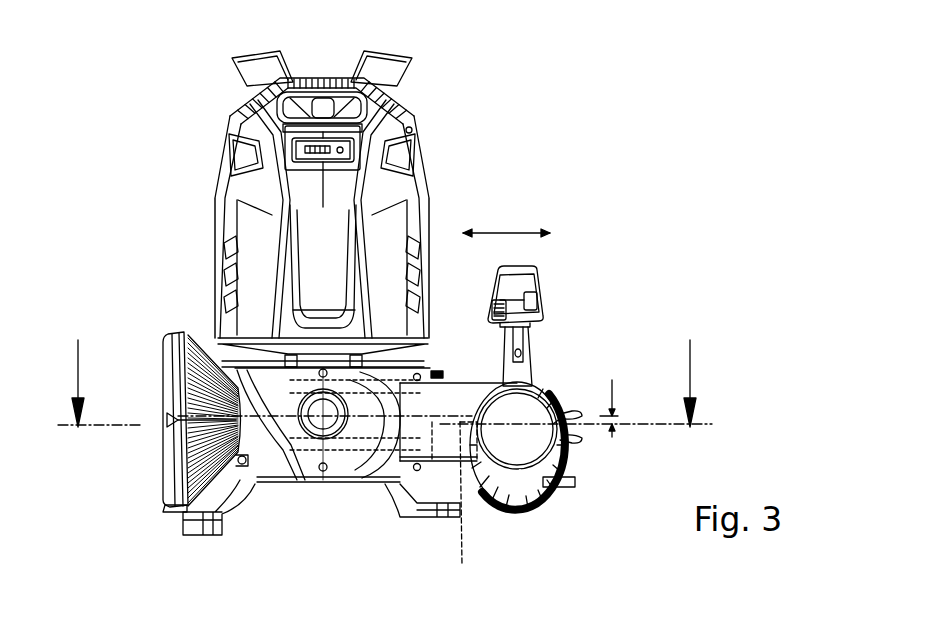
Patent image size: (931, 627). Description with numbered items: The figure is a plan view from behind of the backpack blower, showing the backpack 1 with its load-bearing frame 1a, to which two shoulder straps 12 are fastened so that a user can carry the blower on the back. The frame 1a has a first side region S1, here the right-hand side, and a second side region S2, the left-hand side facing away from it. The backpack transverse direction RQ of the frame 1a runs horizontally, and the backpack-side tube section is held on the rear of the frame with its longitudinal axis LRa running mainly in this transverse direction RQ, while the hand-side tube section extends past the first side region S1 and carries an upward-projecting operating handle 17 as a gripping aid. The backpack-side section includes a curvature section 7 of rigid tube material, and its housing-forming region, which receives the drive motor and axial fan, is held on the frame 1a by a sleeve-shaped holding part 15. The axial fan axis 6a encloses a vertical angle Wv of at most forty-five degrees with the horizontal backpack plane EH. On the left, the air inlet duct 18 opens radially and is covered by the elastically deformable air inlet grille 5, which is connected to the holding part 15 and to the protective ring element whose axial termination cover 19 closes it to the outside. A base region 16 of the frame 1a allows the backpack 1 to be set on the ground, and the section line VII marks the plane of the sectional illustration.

The backpack 1 is at (426, 88).
The load-bearing frame 1a is at (420, 112).
The shoulder straps 12 is at (370, 66).
The sleeve-shaped holding part 15 is at (280, 445).
The air inlet duct 18 is at (245, 466).
The base region 16 is at (240, 505).
The axial termination cover 19 is at (162, 387).
The air inlet grille 5 is at (197, 436).
The operating handle 17 is at (533, 340).
The horizontal backpack plane EH is at (520, 413).
The axial fan axis 6a is at (480, 440).
The curvature section 7 is at (560, 440).
The longitudinal axis of the backpack-side tube section LRa is at (470, 505).
The section line VII is at (385, 369).
The vertical angle Wv is at (617, 421).
The backpack transverse direction RQ is at (510, 233).
The first side region S1 is at (427, 340).
The second side region S2 is at (215, 318).